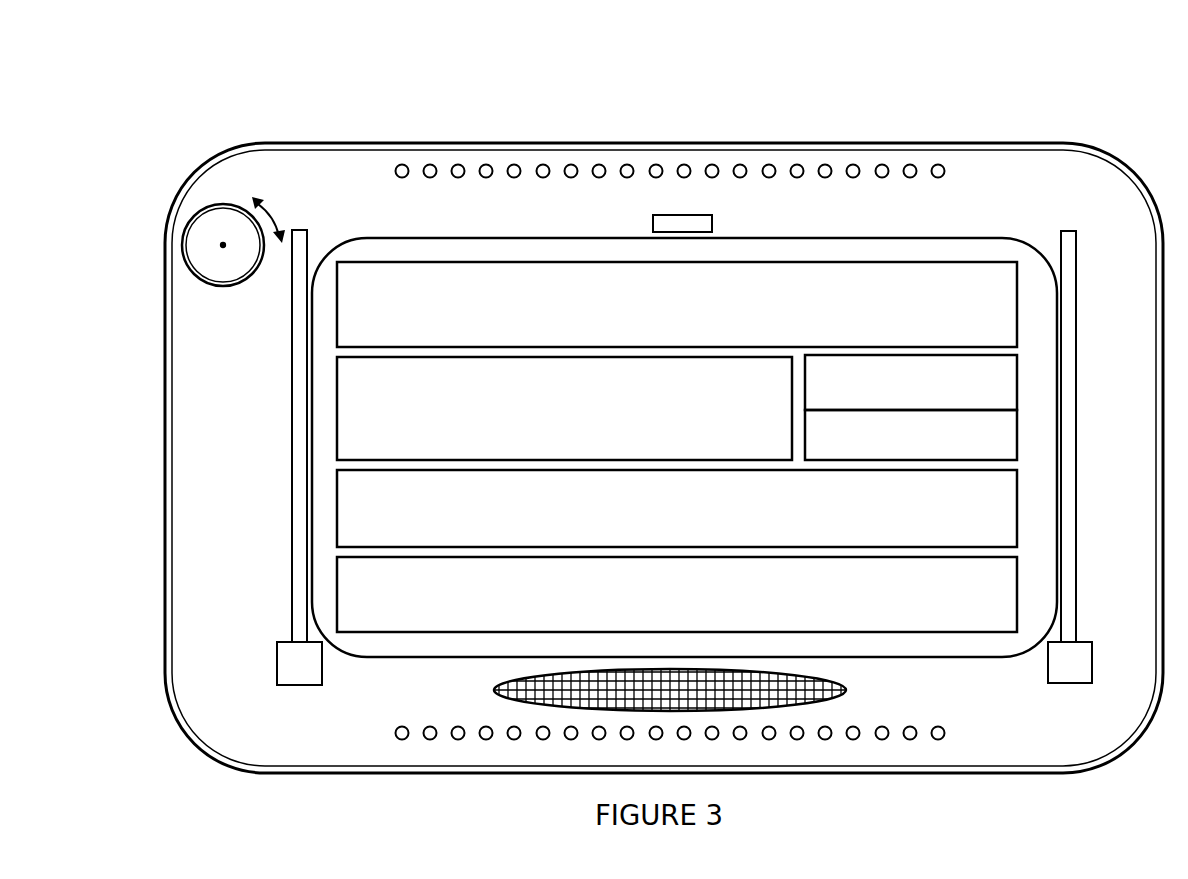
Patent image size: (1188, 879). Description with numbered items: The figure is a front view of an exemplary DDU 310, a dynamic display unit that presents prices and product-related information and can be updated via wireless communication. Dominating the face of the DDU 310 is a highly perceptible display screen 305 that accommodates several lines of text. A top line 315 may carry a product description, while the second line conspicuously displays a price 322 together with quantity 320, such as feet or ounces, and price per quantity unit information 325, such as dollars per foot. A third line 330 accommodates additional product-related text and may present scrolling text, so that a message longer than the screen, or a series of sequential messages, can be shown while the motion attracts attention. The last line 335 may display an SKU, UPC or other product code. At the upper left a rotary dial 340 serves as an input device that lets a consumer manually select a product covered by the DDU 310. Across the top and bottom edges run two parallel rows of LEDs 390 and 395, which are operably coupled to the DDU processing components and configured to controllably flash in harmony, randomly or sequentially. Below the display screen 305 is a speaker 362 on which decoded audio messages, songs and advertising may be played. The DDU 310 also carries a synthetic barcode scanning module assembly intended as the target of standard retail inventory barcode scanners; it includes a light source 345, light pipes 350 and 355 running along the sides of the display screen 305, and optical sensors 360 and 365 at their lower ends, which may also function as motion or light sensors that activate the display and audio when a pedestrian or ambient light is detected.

The DDU 310 is at (1005, 148).
The display screen 305 is at (600, 238).
The top line 315 is at (677, 305).
The quantity 320 is at (911, 384).
The price 322 is at (564, 409).
The price per quantity unit information 325 is at (911, 435).
The third line 330 is at (677, 508).
The last line 335 is at (677, 596).
The rotary dial 340 is at (193, 277).
The light source 345 is at (690, 222).
The light pipe 350 is at (1068, 460).
The light pipe 355 is at (293, 462).
The optical sensor 360 is at (1072, 660).
The speaker 362 is at (846, 690).
The optical sensor 365 is at (295, 668).
The LEDs 390 is at (392, 171).
The LEDs 395 is at (392, 733).